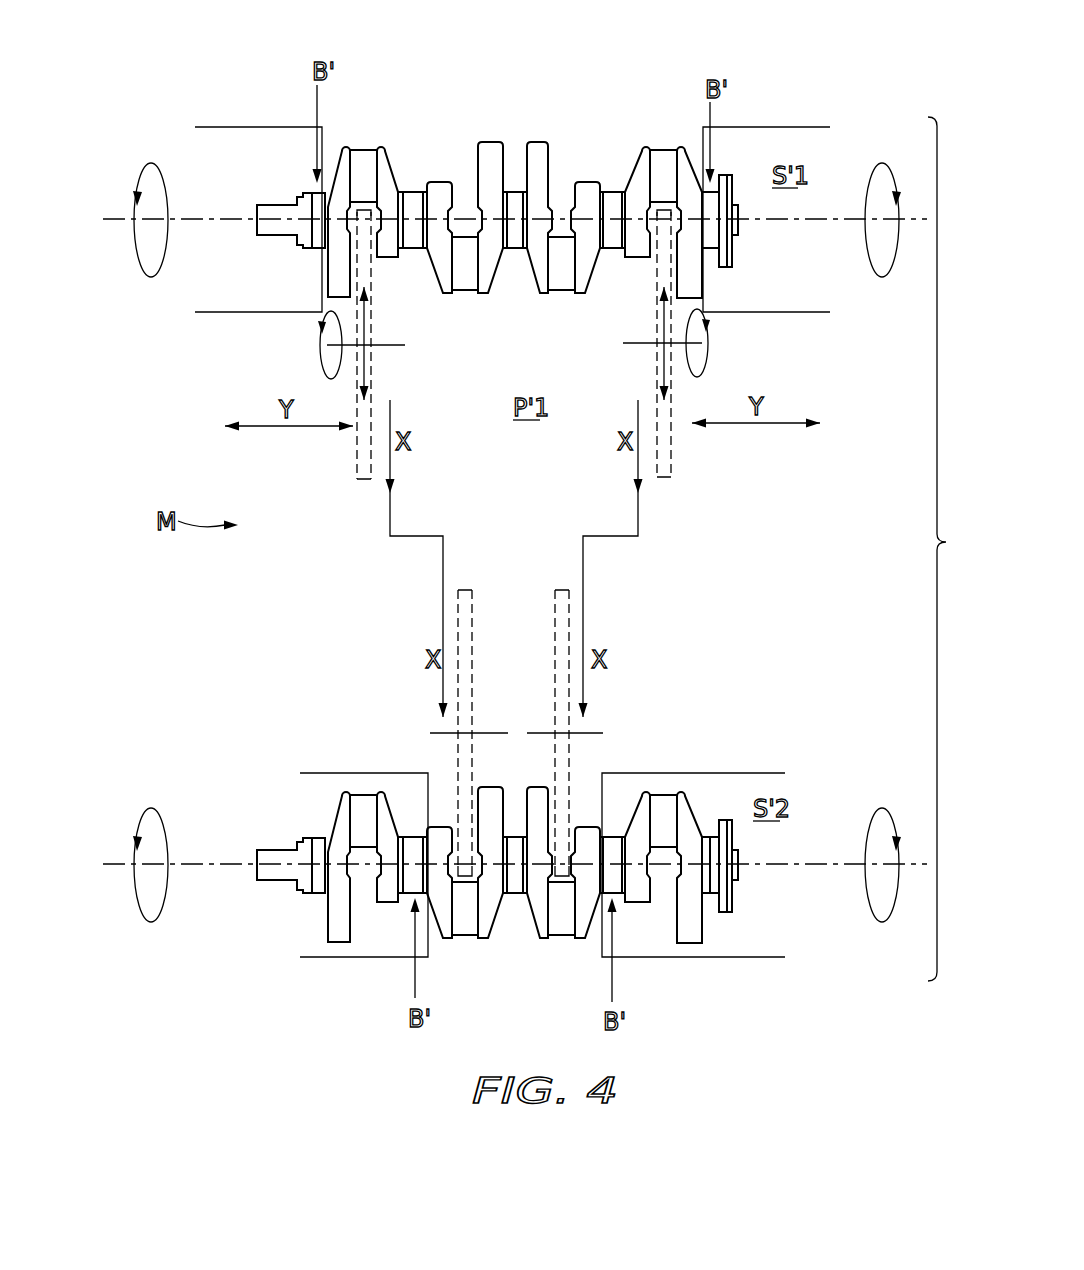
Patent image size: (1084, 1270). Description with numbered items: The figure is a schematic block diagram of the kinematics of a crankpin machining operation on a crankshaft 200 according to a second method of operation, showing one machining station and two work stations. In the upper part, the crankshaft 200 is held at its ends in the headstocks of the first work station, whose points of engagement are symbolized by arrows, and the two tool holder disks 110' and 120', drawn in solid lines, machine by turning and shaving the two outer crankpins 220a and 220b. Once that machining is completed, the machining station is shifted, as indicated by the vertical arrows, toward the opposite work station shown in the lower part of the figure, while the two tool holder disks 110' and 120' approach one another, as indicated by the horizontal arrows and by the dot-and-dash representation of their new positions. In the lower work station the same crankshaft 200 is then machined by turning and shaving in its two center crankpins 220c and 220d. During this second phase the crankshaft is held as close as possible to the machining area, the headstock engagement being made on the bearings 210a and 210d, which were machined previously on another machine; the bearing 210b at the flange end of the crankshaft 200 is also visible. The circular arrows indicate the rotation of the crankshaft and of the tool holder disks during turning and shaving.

The crankshaft 200 is at (513, 108).
The outer crankpin 220a is at (362, 150).
The outer crankpin 220b is at (663, 150).
The center crankpin 220c is at (466, 949).
The center crankpin 220d is at (565, 947).
The bearing 210a is at (412, 811).
The bearing 210b is at (724, 810).
The bearing 210d is at (627, 812).
The tool holder disk 110' is at (345, 383).
The tool holder disk 120' is at (677, 379).